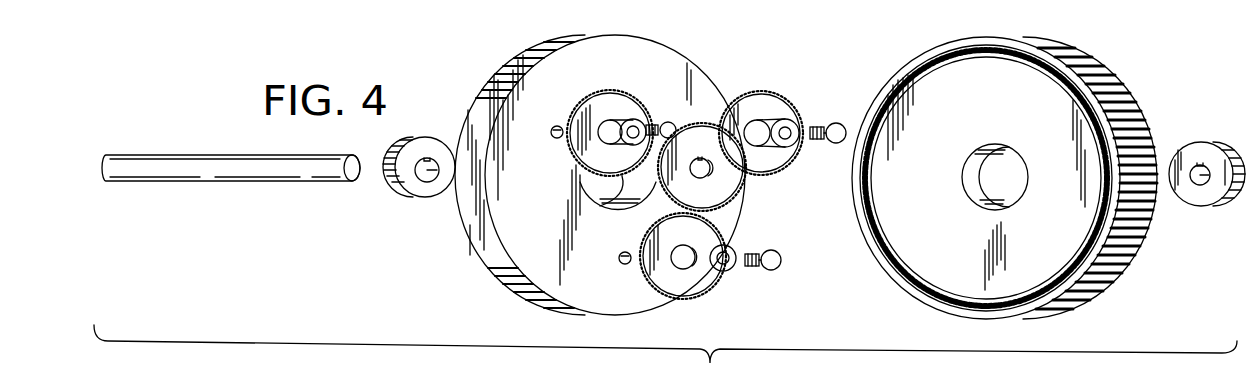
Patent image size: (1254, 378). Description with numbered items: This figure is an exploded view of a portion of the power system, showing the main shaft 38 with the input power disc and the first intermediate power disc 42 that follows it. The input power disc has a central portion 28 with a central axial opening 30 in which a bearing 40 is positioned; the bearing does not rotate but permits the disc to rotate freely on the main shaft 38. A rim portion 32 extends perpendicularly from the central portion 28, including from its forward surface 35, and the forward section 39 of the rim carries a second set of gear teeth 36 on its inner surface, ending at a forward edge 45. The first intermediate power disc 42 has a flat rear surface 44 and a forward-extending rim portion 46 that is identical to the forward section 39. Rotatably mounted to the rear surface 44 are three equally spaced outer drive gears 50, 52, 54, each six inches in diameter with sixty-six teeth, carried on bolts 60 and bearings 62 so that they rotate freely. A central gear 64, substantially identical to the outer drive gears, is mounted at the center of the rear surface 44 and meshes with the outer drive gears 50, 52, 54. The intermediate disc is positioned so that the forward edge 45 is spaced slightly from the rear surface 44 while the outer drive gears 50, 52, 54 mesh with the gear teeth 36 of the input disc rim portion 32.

The central portion 28 is at (917, 275).
The central axial opening 30 is at (1015, 178).
The rim portion 32 is at (1080, 57).
The forward surface 35 is at (918, 275).
The second set of gear teeth 36 is at (885, 102).
The main shaft 38 is at (285, 183).
The forward section 39 is at (912, 75).
The bearing 40 is at (1200, 150).
The first intermediate power disc 42 is at (712, 56).
The rear surface 44 is at (508, 218).
The rim portion 46 is at (490, 93).
The forward edge 45 is at (970, 46).
The outer drive gear 50 is at (613, 97).
The outer drive gear 52 is at (770, 100).
The outer drive gear 54 is at (710, 283).
The bolt 60 is at (676, 124).
The bearing 62 is at (636, 127).
The central gear 64 is at (735, 190).